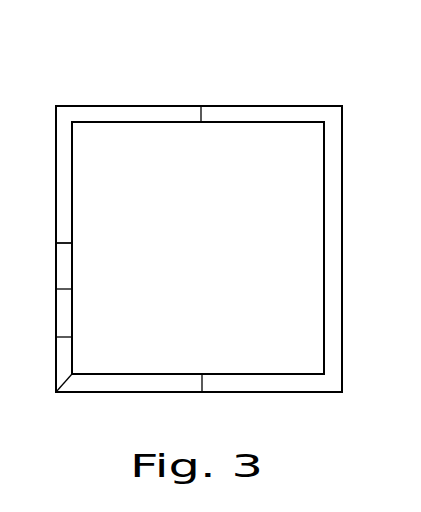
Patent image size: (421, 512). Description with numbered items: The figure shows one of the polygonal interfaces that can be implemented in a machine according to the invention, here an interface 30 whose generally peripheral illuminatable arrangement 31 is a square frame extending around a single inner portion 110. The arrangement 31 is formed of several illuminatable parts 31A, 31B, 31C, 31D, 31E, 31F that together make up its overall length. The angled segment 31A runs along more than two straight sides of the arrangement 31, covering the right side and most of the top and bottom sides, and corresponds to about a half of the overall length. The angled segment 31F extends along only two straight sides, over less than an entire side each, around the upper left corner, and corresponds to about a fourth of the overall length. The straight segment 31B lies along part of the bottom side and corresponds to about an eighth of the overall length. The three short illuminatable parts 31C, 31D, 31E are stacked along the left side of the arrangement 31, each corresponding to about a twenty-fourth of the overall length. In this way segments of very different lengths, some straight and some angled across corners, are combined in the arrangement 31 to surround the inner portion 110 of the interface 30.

The frame assembly 30 is at (198, 230).
The peripheral illuminatable arrangement 31 is at (252, 106).
The angled segment 31A is at (332, 237).
The straight segment 31B is at (134, 380).
The illuminatable part 31C is at (63, 359).
The illuminatable part 31D is at (59, 317).
The illuminatable part 31E is at (63, 270).
The angled segment 31F is at (67, 115).
The inner portion 110 is at (260, 344).